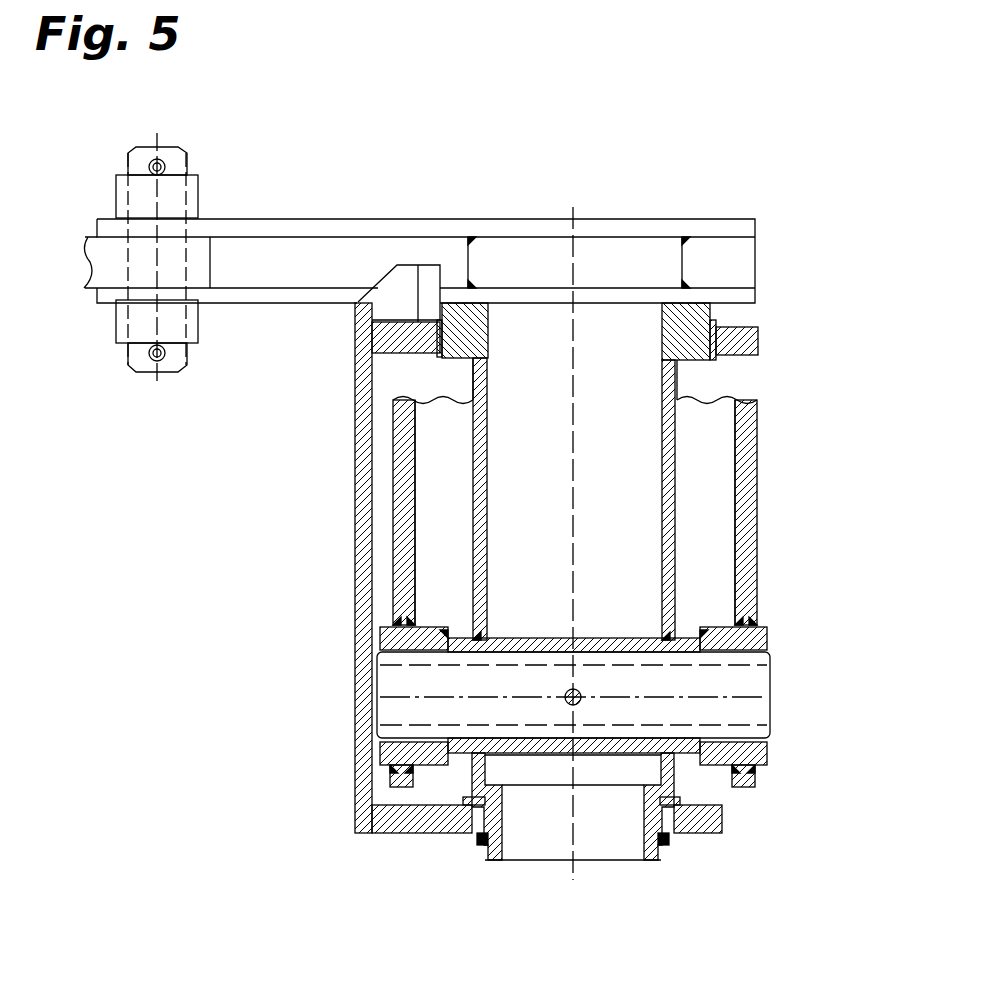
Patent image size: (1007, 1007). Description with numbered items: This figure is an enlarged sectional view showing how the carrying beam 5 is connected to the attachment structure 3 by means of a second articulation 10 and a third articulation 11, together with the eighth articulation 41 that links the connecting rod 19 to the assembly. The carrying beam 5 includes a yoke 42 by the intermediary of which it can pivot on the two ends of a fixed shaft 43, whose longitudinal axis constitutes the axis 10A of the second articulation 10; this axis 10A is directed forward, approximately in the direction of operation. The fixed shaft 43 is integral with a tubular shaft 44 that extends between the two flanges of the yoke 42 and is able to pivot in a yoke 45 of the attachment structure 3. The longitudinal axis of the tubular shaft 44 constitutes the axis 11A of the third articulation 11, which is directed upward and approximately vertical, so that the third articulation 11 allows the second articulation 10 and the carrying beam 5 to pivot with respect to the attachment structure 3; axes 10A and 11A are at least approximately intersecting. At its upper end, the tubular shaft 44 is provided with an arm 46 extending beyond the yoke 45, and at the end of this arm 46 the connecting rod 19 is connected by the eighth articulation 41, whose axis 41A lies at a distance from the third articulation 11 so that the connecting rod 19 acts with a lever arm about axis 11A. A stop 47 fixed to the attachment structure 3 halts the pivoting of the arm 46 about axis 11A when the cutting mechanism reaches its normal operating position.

The attachment structure 3 is at (353, 478).
The carrying beam 5 is at (413, 495).
The second articulation 10 is at (386, 661).
The axis of the second articulation 10A is at (412, 695).
The third articulation 11 is at (725, 320).
The axis of the third articulation 11A is at (573, 400).
The connecting rod 19 is at (108, 270).
The eighth articulation 41 is at (110, 349).
The axis of the eighth articulation 41A is at (158, 205).
The yoke 42 is at (745, 537).
The fixed shaft 43 is at (752, 715).
The tubular shaft 44 is at (487, 573).
The yoke 45 is at (382, 822).
The arm 46 is at (422, 228).
The stop 47 is at (425, 283).